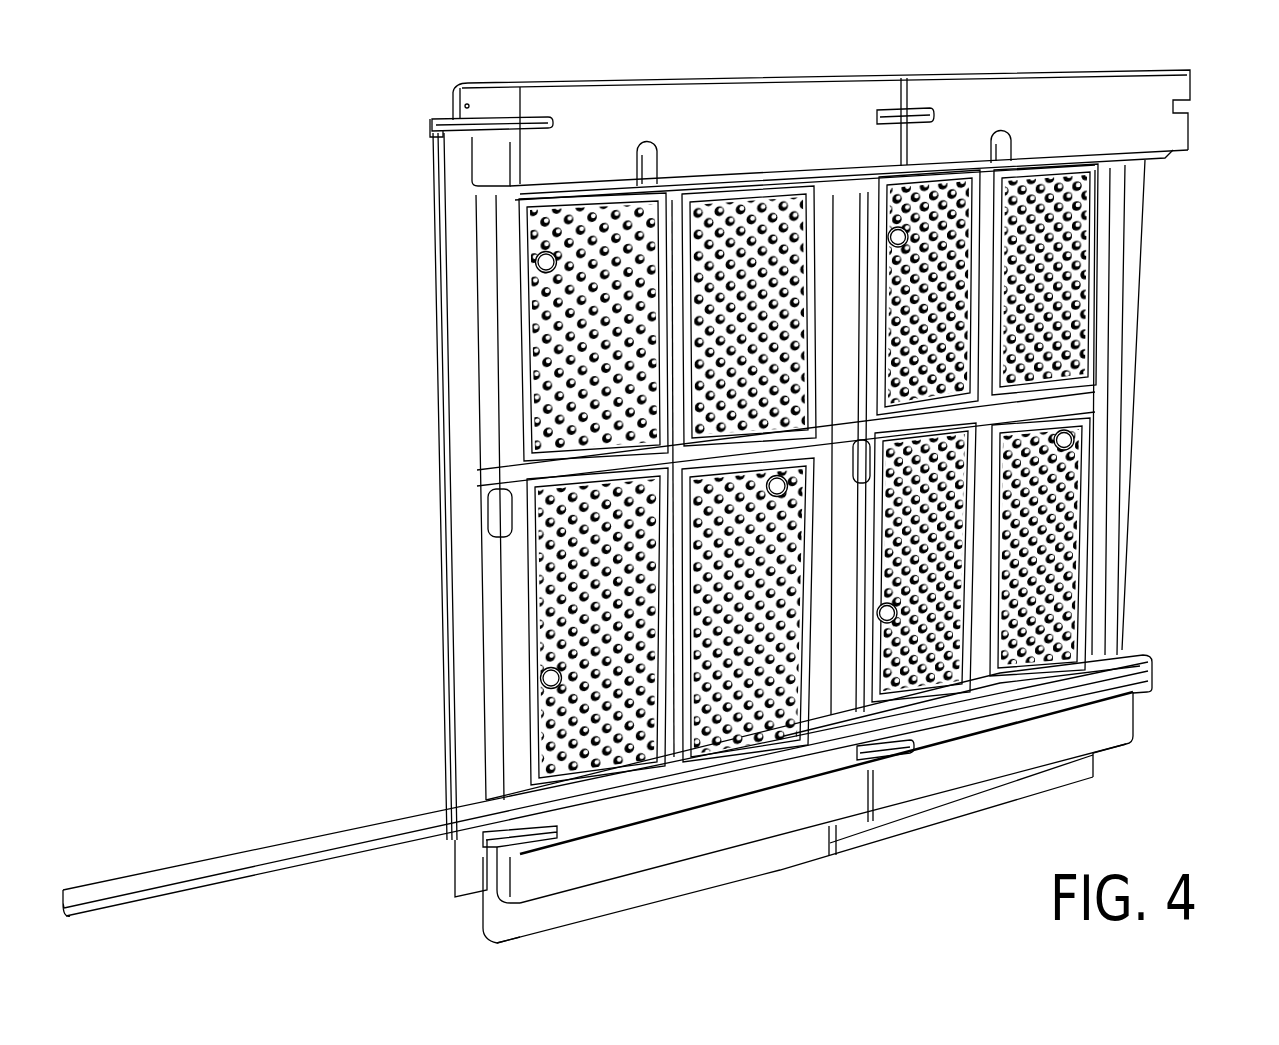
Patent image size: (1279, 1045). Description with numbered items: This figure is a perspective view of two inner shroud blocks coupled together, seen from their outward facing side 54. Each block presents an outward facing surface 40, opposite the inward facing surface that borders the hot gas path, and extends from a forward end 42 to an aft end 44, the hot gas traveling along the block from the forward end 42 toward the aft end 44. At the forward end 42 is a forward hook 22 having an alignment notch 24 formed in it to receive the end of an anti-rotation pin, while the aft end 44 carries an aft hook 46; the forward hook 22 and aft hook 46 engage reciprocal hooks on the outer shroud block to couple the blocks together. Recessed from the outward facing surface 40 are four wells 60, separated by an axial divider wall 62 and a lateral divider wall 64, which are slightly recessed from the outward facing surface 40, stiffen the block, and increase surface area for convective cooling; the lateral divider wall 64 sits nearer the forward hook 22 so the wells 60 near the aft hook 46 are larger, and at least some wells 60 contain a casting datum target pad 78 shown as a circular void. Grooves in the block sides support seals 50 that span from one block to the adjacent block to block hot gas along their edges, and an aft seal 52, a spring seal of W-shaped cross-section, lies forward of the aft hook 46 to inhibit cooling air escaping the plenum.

The forward hook 22 is at (1173, 132).
The alignment notch 24 is at (645, 150).
The outward facing surface 40 is at (1128, 335).
The forward end 42 is at (1168, 68).
The aft end 44 is at (1065, 800).
The aft hook 46 is at (577, 868).
The seals 50 is at (443, 122).
The aft seal 52 is at (203, 883).
The outward facing side 54 is at (1132, 490).
The wells 60 is at (790, 195).
The axial divider wall 62 is at (690, 218).
The lateral divider wall 64 is at (547, 484).
The casting datum target pad 78 is at (540, 262).